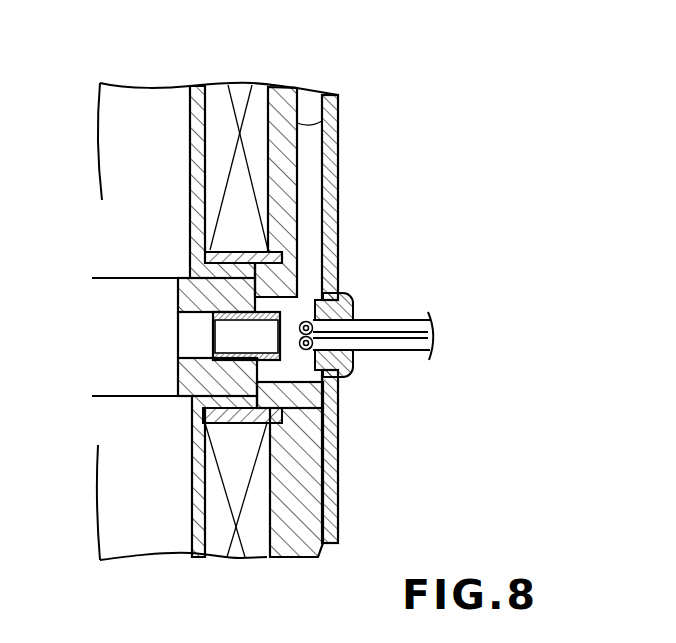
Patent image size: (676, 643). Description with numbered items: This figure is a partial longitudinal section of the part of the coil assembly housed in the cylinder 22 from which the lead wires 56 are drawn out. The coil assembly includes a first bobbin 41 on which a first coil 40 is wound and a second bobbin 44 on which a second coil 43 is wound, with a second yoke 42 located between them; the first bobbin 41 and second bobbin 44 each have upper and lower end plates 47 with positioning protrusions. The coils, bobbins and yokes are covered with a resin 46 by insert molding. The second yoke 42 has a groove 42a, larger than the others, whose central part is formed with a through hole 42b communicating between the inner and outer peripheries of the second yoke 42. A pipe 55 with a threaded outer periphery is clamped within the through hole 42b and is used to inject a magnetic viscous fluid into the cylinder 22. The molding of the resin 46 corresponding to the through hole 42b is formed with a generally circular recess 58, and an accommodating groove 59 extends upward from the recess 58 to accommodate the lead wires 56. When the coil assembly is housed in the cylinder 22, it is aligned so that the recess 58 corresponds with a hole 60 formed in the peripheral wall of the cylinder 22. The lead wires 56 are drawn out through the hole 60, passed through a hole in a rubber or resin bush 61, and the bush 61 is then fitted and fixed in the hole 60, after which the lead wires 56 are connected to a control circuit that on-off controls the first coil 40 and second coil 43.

The cylinder 22 is at (338, 160).
The first coil 40 is at (268, 118).
The first bobbin 41 is at (207, 108).
The second yoke 42 is at (297, 287).
The groove 42a is at (320, 413).
The through hole 42b is at (194, 318).
The second coil 43 is at (275, 527).
The second bobbin 44 is at (207, 527).
The resin 46 is at (312, 484).
The end plates 47 is at (297, 257).
The pipe 55 is at (275, 377).
The lead wires 56 is at (418, 322).
The recess 58 is at (338, 380).
The accommodating groove 59 is at (338, 113).
The hole 60 is at (353, 364).
The bush 61 is at (353, 309).